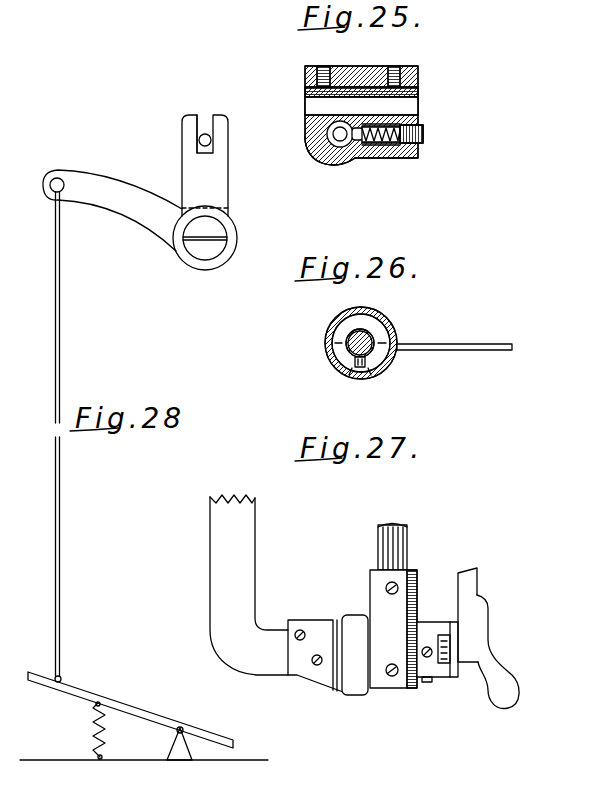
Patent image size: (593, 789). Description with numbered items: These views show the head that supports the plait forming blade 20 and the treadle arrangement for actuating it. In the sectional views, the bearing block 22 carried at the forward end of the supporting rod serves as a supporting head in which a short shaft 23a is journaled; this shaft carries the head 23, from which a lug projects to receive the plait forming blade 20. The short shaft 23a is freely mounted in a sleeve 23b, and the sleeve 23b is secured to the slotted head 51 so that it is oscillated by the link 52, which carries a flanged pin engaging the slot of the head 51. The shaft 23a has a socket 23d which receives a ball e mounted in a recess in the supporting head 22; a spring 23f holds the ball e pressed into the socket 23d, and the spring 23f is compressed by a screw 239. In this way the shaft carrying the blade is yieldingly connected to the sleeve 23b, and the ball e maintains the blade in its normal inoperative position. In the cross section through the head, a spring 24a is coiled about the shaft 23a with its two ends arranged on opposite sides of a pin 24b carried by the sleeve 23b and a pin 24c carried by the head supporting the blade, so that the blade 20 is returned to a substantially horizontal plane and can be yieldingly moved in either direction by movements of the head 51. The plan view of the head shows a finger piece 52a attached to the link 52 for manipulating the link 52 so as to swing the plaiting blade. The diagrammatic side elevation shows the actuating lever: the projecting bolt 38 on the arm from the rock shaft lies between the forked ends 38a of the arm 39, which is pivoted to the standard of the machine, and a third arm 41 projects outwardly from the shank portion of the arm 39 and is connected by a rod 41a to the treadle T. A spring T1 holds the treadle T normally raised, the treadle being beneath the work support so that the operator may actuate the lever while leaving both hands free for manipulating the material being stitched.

In FIG. 25, the bearing block 22 is at (386, 50).
In FIG. 27, the bearing block 22 is at (392, 690).
In FIG. 25, the head 23 is at (352, 148).
In FIG. 27, the head 23 is at (338, 692).
In FIG. 25, the short shaft 23a is at (318, 150).
In FIG. 26, the short shaft 23a is at (348, 336).
In FIG. 26, the sleeve 23b is at (383, 322).
In FIG. 25, the socket 23d is at (372, 146).
In FIG. 25, the spring 23f is at (385, 144).
In FIG. 25, the screw 239 is at (423, 137).
In FIG. 25, the ball e is at (362, 141).
In FIG. 26, the spring 24a is at (377, 338).
In FIG. 26, the pin 24b is at (360, 370).
In FIG. 26, the pin 24c is at (367, 368).
In FIG. 26, the plait forming blade 20 is at (503, 343).
In FIG. 27, the plait forming blade 20 is at (276, 593).
In FIG. 27, the slotted head 51 is at (450, 643).
In FIG. 27, the link 52 is at (470, 581).
In FIG. 27, the finger piece 52a is at (506, 678).
In FIG. 28, the projecting bolt 38 is at (211, 140).
In FIG. 28, the forked ends 38a is at (222, 123).
In FIG. 28, the arm 39 is at (205, 181).
In FIG. 28, the third arm 41 is at (130, 208).
In FIG. 28, the rod 41a is at (61, 363).
In FIG. 28, the treadle T is at (138, 718).
In FIG. 28, the spring T1 is at (92, 723).